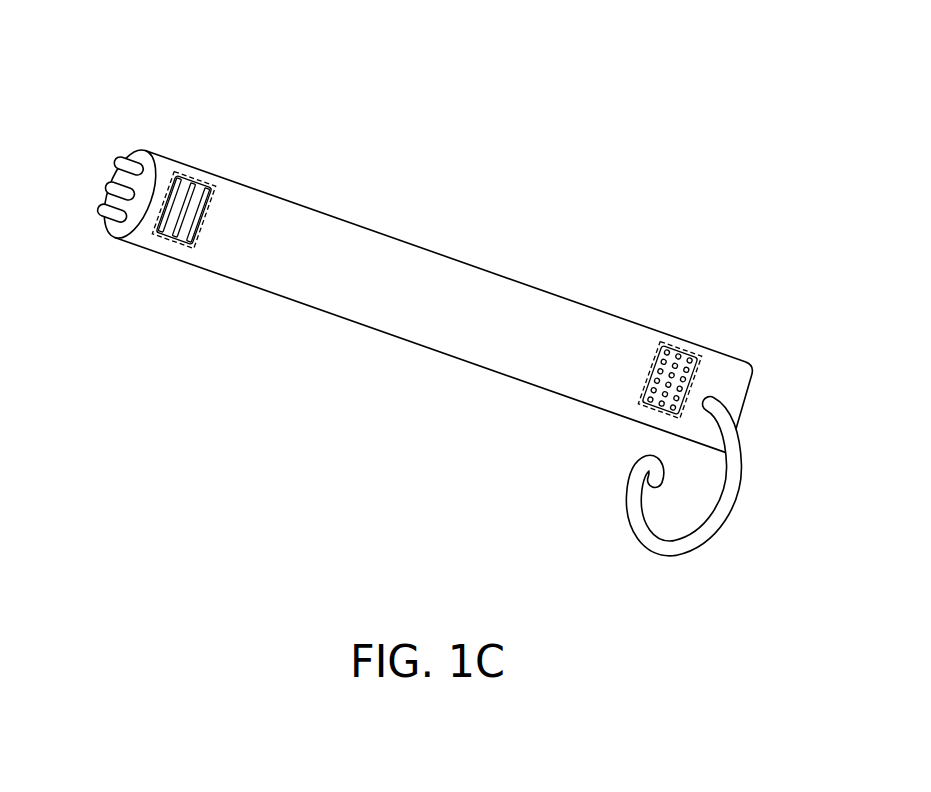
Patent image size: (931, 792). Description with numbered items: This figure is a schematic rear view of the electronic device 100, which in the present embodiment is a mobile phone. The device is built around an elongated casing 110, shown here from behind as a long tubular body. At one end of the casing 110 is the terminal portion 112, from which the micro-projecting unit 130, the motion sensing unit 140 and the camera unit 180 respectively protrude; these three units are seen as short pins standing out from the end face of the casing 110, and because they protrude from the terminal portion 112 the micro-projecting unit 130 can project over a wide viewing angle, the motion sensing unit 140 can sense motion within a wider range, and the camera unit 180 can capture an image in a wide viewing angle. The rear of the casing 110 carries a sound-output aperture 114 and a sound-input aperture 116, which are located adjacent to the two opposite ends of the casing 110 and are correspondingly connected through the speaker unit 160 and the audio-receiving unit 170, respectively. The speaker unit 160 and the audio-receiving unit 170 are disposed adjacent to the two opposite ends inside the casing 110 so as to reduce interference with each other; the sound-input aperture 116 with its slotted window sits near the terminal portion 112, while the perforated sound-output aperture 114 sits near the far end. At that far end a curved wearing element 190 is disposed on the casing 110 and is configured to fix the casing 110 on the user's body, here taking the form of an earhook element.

The electronic device 100 is at (137, 62).
The casing 110 is at (470, 262).
The terminal portion 112 is at (138, 155).
The sound-output aperture 114 is at (660, 357).
The sound-input aperture 116 is at (203, 210).
The micro-projecting unit 130 is at (110, 188).
The motion sensing unit 140 is at (102, 217).
The speaker unit 160 is at (700, 342).
The audio-receiving unit 170 is at (208, 177).
The camera unit 180 is at (120, 162).
The wearing element 190 is at (702, 528).